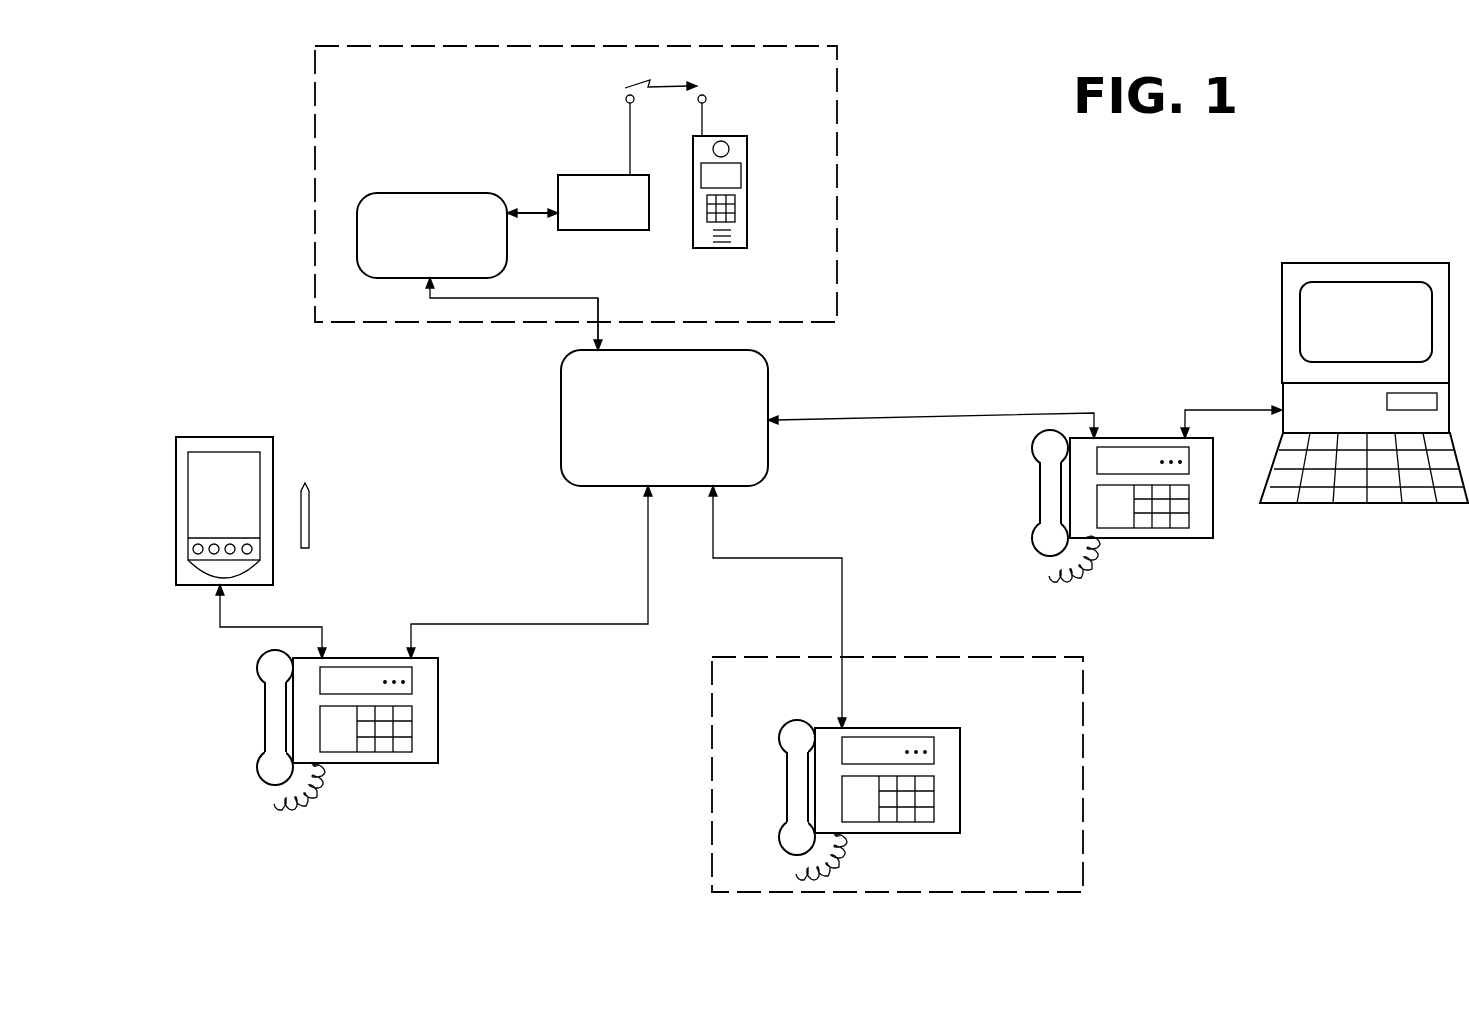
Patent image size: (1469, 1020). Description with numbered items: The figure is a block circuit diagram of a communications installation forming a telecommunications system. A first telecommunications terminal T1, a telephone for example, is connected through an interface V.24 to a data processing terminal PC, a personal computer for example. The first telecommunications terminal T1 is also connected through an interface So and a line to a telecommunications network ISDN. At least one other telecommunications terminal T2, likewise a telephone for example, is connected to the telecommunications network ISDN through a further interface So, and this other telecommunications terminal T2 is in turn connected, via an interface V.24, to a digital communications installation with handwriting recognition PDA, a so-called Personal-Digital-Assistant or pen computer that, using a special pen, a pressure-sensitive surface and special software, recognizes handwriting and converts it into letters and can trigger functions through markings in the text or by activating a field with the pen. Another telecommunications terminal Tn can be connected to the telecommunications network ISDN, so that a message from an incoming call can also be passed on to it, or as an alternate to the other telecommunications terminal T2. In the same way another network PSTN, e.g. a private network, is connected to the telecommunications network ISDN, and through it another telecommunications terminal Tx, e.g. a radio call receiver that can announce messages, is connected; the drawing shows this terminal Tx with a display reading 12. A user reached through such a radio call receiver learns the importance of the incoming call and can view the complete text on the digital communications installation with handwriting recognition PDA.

The another network PSTN is at (432, 235).
The telecommunications network ISDN is at (664, 418).
The another telecommunications terminal Tx is at (683, 198).
The display of mobile telephone 12 is at (721, 176).
The interface So is at (752, 523).
The interface V.24 is at (716, 520).
The digital communications installation with handwriting recognition PDA is at (176, 500).
The first telecommunications terminal T1 is at (1137, 436).
The other telecommunications terminal T2 is at (438, 735).
The another telecommunications terminal Tn is at (960, 780).
The data processing terminal PC is at (1282, 307).